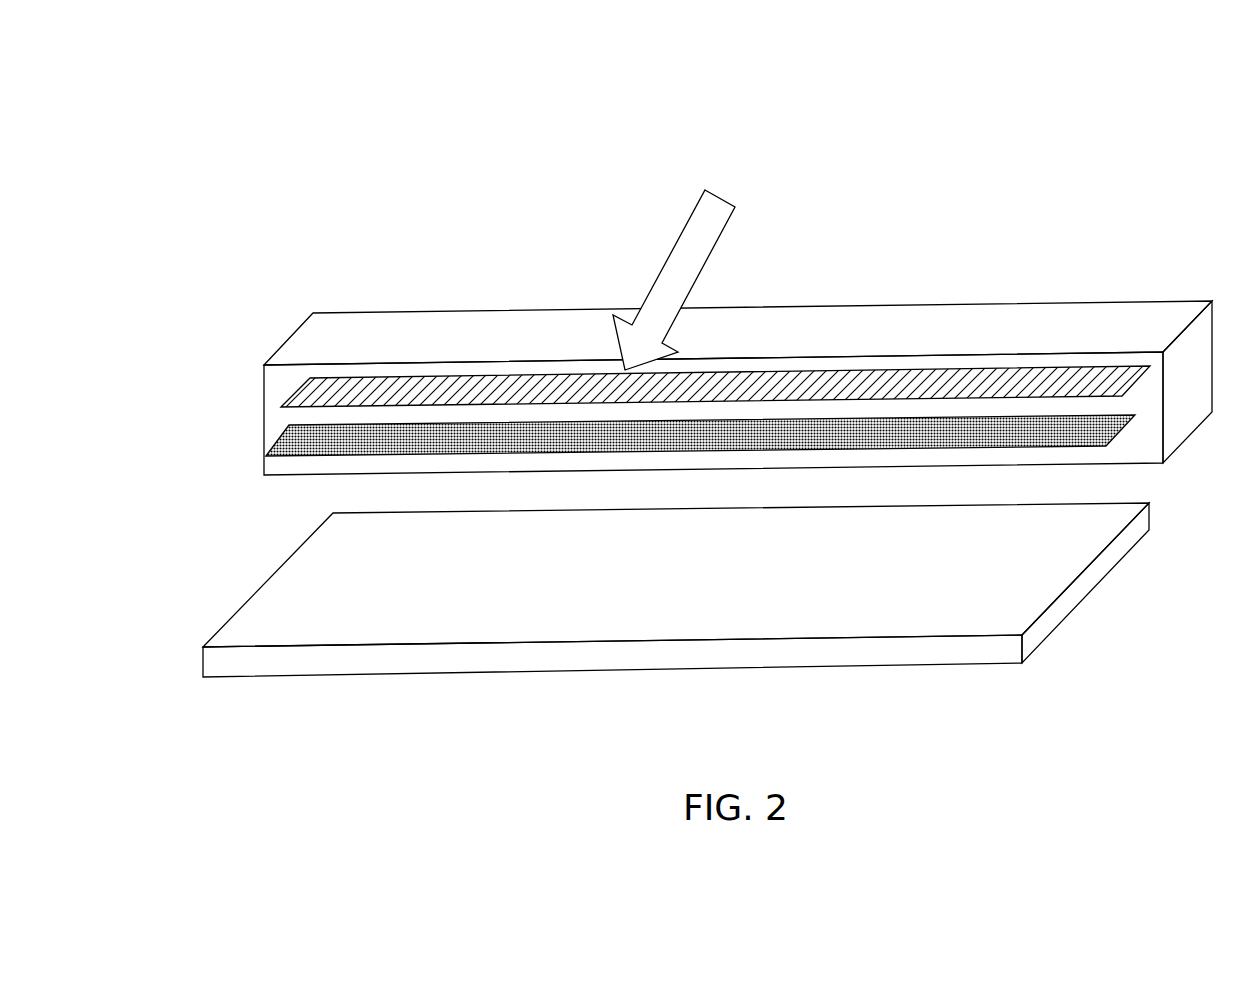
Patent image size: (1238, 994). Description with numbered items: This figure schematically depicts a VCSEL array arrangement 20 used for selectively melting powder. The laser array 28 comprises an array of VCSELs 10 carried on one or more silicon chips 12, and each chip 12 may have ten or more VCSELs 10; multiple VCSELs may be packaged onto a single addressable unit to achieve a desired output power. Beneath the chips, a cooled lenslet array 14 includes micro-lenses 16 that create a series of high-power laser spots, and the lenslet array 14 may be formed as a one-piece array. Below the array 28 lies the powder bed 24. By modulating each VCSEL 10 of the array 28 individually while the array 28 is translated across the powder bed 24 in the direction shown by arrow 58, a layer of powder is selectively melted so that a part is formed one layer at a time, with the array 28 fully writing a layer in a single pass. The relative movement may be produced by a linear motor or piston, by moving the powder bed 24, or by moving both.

The VCSEL 10 is at (343, 383).
The silicon chip 12 is at (282, 388).
The cooled lenslet array 14 is at (283, 442).
The micro-lens 16 is at (322, 458).
The additive manufacturing system 20 is at (1128, 98).
The powder bed 24 is at (1032, 577).
The laser array 28 is at (1080, 286).
The arrow 58 is at (718, 242).